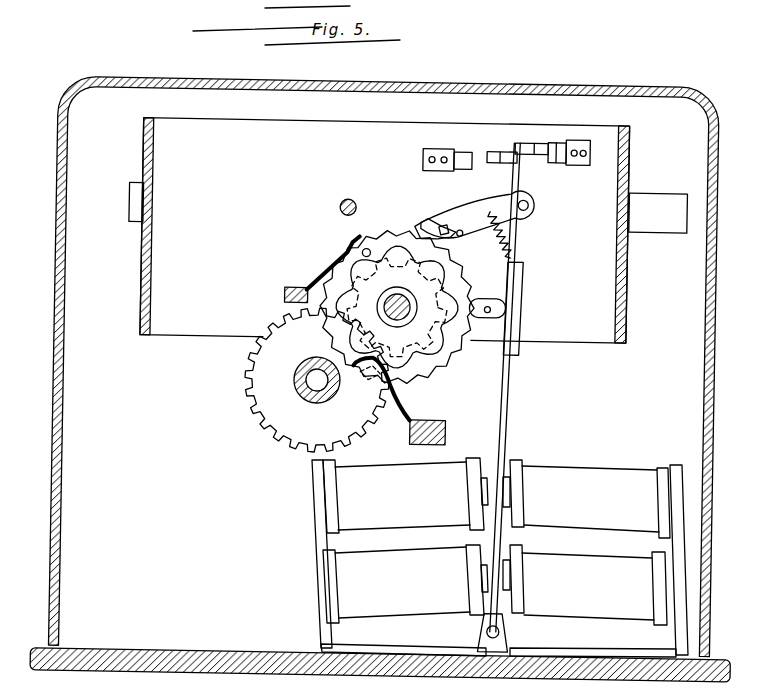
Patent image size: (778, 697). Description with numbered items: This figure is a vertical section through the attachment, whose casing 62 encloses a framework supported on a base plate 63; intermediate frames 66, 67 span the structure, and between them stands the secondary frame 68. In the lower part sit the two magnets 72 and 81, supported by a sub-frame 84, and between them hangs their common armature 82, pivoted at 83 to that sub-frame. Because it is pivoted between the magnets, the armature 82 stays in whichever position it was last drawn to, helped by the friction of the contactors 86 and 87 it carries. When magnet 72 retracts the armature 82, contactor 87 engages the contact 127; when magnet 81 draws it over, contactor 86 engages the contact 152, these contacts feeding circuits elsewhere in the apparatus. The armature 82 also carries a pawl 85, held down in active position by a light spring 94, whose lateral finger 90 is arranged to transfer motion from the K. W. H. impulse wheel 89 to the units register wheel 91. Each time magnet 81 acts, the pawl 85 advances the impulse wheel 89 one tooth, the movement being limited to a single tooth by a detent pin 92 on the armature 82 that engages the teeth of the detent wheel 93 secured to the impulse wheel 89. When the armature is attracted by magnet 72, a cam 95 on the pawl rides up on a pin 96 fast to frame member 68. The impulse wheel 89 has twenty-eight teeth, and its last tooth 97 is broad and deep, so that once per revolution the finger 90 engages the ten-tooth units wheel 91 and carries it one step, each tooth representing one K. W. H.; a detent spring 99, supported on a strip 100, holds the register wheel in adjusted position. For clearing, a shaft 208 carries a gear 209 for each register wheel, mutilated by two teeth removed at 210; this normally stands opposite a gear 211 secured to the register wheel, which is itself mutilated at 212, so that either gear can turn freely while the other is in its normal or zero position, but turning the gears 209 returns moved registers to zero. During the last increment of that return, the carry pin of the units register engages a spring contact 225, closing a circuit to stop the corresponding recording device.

The casing 62 is at (540, 83).
The base plate 63 is at (205, 655).
The intermediate frame 66 is at (141, 280).
The intermediate frame 67 is at (628, 168).
The secondary frame 68 is at (385, 230).
The magnet 72 is at (586, 542).
The magnet 81 is at (405, 540).
The armature 82 is at (513, 403).
The pivot 83 is at (490, 630).
The sub-frame 84 is at (312, 592).
The pawl 85 is at (477, 203).
The contactor 86 is at (493, 150).
The contactor 87 is at (526, 141).
The K. W. H. impulse wheel 89 is at (364, 250).
The lateral finger 90 is at (419, 221).
The units register wheel 91 is at (453, 277).
The detent pin 92 is at (486, 303).
The detent wheel 93 is at (447, 361).
The light spring 94 is at (513, 248).
The cam 95 is at (439, 229).
The pin 96 is at (460, 234).
The last tooth 97 is at (352, 235).
The detent spring 99 is at (397, 424).
The strip 100 is at (447, 432).
The contact 127 is at (552, 143).
The contact 152 is at (453, 147).
The shaft 208 is at (312, 387).
The gear 209 is at (258, 380).
The mutilated portion 210 is at (327, 353).
The gear 211 is at (370, 378).
The mutilated portion 212 is at (349, 334).
The spring contact 225 is at (298, 289).